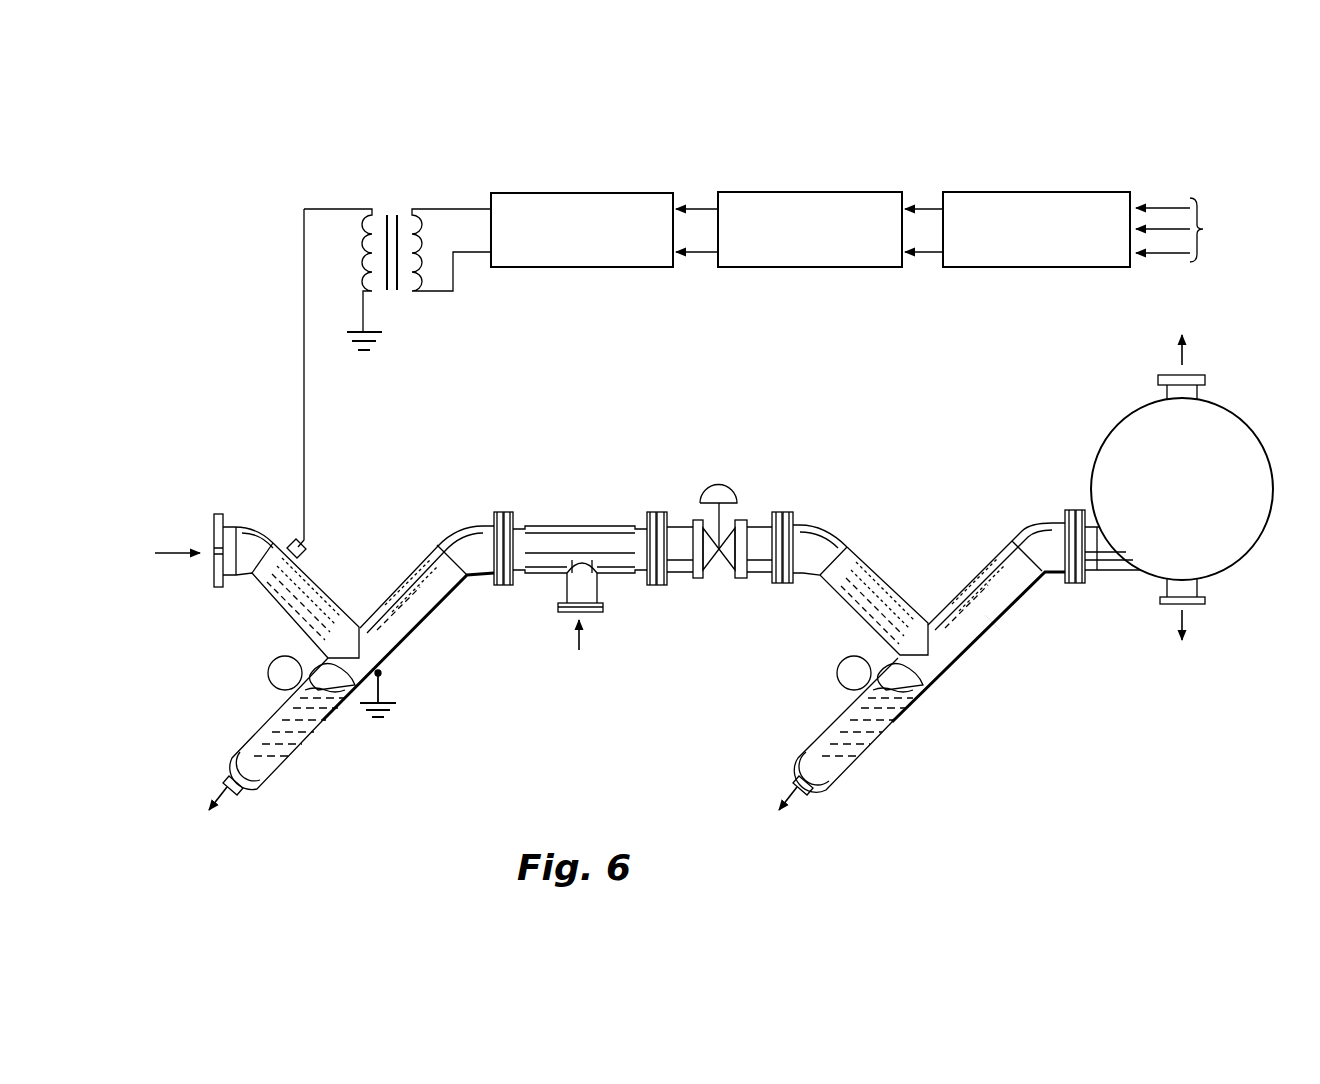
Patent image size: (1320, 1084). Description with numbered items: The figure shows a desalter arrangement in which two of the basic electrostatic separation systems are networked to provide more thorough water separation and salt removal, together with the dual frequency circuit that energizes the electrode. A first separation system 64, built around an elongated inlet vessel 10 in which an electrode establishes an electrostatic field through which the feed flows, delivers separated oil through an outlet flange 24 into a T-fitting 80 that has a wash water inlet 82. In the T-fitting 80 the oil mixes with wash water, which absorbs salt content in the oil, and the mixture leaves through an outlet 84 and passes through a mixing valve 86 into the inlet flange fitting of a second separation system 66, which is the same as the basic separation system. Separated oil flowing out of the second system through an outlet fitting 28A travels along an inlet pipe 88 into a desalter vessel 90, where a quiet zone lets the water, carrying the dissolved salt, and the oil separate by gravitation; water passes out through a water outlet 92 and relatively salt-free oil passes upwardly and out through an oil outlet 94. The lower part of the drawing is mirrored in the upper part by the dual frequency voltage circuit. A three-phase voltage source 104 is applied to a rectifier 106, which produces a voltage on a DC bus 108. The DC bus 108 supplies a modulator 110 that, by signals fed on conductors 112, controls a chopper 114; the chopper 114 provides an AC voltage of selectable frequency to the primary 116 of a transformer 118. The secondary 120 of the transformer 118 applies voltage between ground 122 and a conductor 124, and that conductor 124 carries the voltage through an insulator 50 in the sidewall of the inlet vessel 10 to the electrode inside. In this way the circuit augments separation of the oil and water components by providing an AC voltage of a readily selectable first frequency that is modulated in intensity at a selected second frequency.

The inlet vessel 10 is at (268, 582).
The outlet flange 24 is at (497, 512).
The outlet fitting 28A is at (1067, 512).
The insulator 50 is at (302, 553).
The first separation system 64 is at (354, 583).
The second separation system 66 is at (928, 566).
The T-fitting 80 is at (575, 526).
The wash water inlet 82 is at (560, 608).
The outlet 84 is at (650, 512).
The mixing valve 86 is at (745, 578).
The inlet pipe 88 is at (1110, 572).
The desalter vessel 90 is at (1220, 410).
The water outlet 92 is at (1168, 604).
The oil outlet 94 is at (1158, 380).
The three-phase voltage source 104 is at (1177, 202).
The rectifier 106 is at (1012, 270).
The DC bus 108 is at (923, 212).
The modulator 110 is at (795, 270).
The conductors 112 is at (690, 212).
The chopper 114 is at (567, 270).
The primary 116 is at (423, 260).
The transformer 118 is at (393, 213).
The secondary 120 is at (352, 256).
The ground 122 is at (368, 333).
The conductor 124 is at (302, 394).